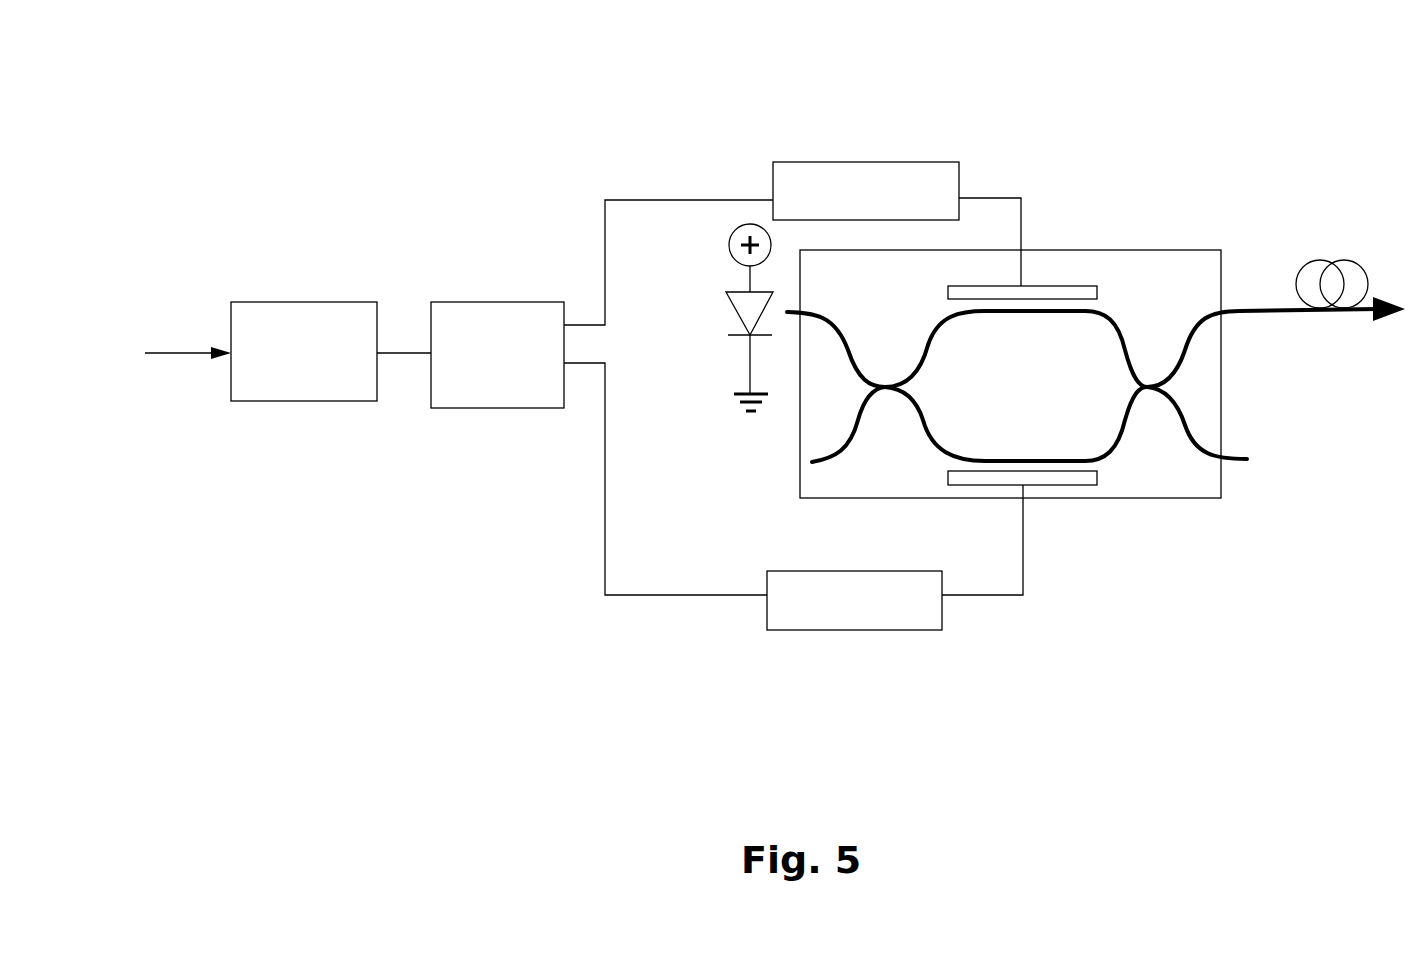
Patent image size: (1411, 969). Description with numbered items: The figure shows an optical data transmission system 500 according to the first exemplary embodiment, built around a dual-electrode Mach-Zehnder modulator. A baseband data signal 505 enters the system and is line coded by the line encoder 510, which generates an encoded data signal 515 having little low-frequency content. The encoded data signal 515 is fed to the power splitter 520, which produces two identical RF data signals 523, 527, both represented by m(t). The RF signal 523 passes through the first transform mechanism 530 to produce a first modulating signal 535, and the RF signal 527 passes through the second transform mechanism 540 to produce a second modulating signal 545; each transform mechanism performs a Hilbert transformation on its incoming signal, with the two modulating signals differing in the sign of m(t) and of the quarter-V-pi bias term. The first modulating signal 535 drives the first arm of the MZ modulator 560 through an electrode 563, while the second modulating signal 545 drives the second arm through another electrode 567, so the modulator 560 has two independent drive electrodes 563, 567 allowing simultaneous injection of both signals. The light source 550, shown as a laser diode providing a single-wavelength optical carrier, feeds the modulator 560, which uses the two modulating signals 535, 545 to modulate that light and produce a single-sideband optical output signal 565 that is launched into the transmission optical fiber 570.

The transmission system 500 is at (536, 594).
The baseband data signal 505 is at (188, 352).
The line encoder 510 is at (275, 302).
The encoded data signal 515 is at (402, 352).
The power splitter 520 is at (472, 302).
The RF data signal 523 is at (581, 325).
The RF data signal 527 is at (590, 365).
The first transform mechanism 530 is at (875, 162).
The first modulating signal 535 is at (985, 198).
The second transform mechanism 540 is at (843, 630).
The second modulating signal 545 is at (1028, 568).
The light source 550 is at (735, 300).
The MZ modulator 560 is at (1070, 249).
The electrode 563 is at (1090, 286).
The single-sideband optical output signal 565 is at (1280, 312).
The electrode 567 is at (1072, 488).
The transmission optical fiber 570 is at (1313, 260).